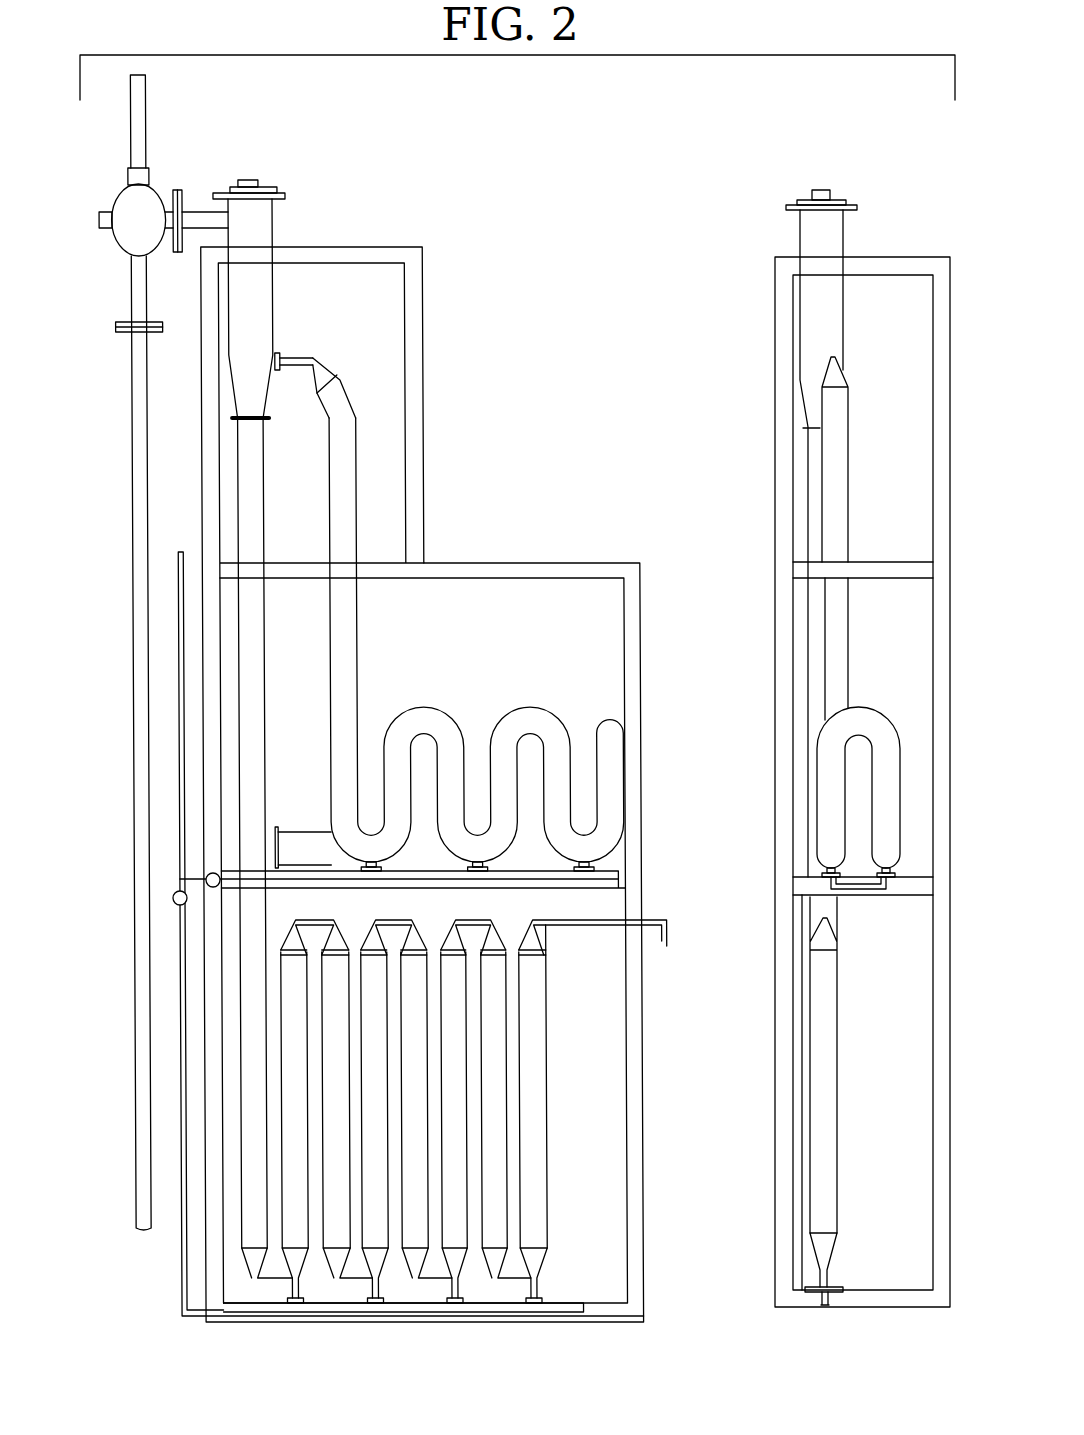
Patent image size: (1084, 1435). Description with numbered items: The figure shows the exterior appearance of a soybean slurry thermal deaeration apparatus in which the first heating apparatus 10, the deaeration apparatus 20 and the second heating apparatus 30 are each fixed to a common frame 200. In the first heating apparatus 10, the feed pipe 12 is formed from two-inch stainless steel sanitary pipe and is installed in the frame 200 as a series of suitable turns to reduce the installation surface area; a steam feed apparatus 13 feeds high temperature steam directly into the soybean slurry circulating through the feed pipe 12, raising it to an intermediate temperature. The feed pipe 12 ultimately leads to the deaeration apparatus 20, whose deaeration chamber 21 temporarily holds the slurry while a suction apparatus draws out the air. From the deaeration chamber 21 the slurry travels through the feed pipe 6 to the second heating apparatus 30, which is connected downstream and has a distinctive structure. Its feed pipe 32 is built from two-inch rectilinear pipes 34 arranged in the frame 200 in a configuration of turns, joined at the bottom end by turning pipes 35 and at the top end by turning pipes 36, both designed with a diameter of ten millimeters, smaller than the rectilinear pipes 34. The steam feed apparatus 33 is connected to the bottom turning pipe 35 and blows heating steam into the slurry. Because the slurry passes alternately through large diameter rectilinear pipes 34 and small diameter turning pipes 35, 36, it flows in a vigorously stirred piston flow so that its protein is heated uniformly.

The feed pipe 6 is at (243, 483).
The first heating apparatus 10 is at (433, 668).
The feed pipe 12 is at (518, 712).
The steam feed apparatus 13 is at (586, 872).
The deaeration apparatus 20 is at (330, 326).
The deaeration chamber 21 is at (266, 218).
The second heating apparatus 30 is at (411, 1120).
The feed pipe 32 is at (243, 1040).
The steam feed apparatus 33 is at (576, 1312).
The rectilinear pipe 34 is at (281, 1200).
The turning pipe 35 is at (251, 1280).
The turning pipe 36 is at (312, 918).
The frame 200 is at (637, 628).